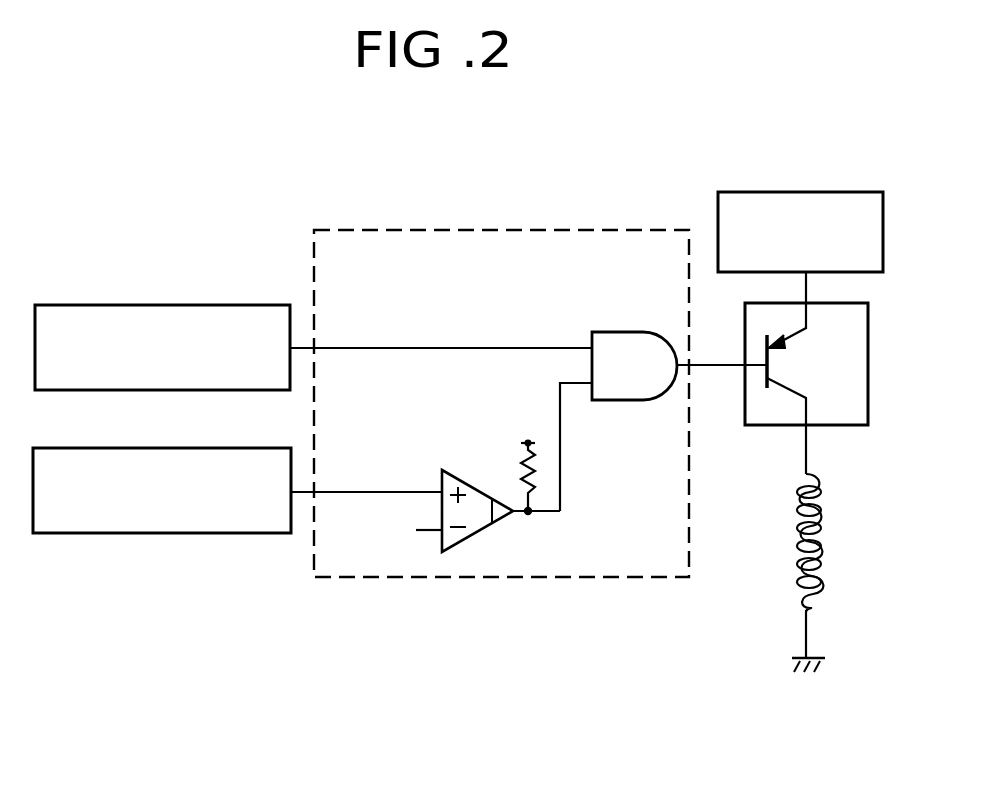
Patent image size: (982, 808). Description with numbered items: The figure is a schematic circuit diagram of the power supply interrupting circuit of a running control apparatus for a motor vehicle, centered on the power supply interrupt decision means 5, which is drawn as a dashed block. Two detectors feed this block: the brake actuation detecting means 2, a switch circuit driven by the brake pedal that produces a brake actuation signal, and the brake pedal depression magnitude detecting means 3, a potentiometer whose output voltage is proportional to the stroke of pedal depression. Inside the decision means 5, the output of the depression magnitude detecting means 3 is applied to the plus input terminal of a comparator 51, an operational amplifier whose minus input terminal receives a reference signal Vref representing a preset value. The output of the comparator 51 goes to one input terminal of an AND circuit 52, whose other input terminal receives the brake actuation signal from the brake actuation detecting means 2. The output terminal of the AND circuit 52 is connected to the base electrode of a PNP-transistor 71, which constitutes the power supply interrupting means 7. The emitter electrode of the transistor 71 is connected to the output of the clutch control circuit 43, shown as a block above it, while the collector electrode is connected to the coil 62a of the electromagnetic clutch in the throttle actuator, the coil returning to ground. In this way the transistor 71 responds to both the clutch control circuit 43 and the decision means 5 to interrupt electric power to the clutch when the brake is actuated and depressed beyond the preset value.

The brake actuation detecting means 2 is at (222, 305).
The brake pedal depression magnitude detecting means 3 is at (173, 448).
The power supply interrupt decision means 5 is at (511, 230).
The comparator 51 is at (463, 540).
The AND circuit 52 is at (612, 332).
The clutch control circuit 43 is at (772, 192).
The power supply interrupting means 7 is at (805, 374).
The PNP-transistor 71 is at (797, 388).
The coil 62a is at (798, 572).